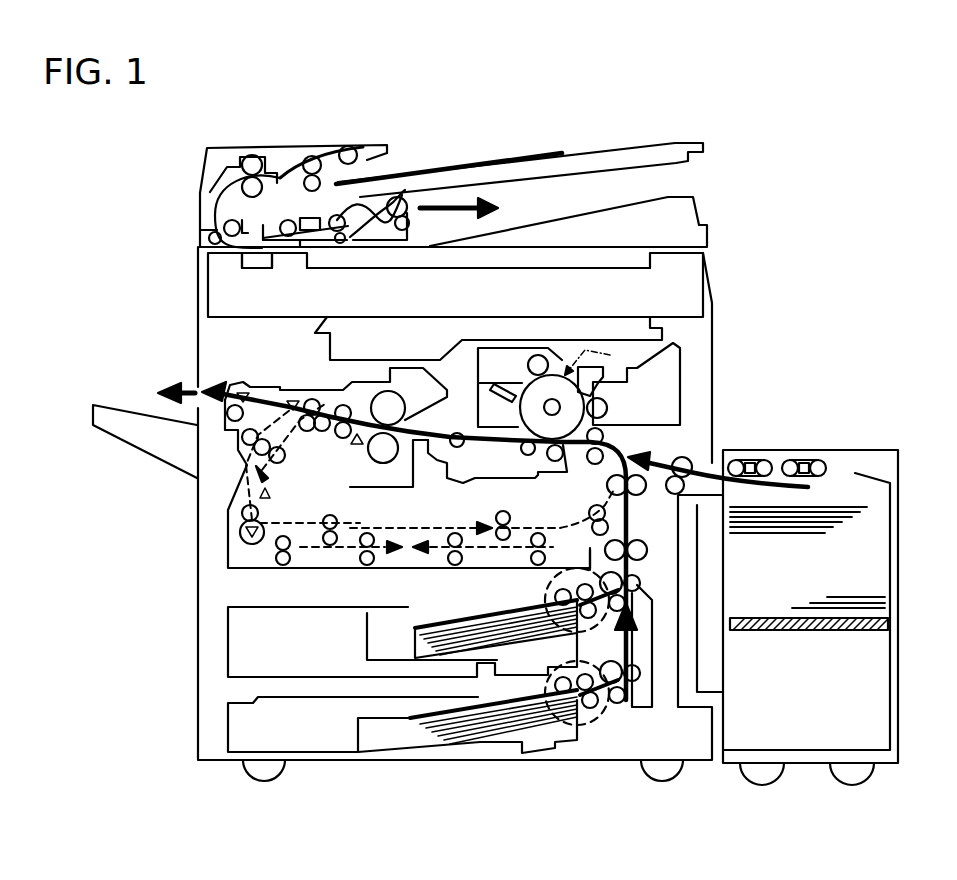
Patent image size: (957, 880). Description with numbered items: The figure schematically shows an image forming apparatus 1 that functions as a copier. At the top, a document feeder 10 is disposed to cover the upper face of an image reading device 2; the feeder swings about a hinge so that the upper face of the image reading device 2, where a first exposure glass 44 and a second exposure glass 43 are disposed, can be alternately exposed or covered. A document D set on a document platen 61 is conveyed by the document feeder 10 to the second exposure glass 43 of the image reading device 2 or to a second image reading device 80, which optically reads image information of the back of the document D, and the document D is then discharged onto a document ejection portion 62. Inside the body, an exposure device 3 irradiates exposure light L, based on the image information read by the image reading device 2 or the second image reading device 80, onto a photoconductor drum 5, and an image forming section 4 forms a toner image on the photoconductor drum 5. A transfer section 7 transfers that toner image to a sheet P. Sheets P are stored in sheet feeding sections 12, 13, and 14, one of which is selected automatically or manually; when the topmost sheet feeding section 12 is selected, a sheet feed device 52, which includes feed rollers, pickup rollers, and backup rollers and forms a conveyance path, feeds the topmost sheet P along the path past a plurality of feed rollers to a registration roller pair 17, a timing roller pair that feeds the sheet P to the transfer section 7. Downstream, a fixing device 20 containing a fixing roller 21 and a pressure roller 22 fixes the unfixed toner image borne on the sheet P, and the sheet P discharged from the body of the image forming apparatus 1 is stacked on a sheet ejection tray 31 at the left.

The image forming apparatus 1 is at (728, 121).
The image reading device 2 is at (216, 324).
The exposure device 3 is at (662, 320).
The image forming section 4 is at (688, 357).
The photoconductor drum 5 is at (528, 376).
The transfer section 7 is at (556, 463).
The document feeder 10 is at (249, 141).
The sheet feeding section 12 is at (366, 638).
The sheet feeding section 13 is at (226, 733).
The sheet feeding section 14 is at (846, 470).
The registration roller pair 17 is at (606, 440).
The fixing device 20 is at (397, 493).
The fixing roller 21 is at (356, 388).
The pressure roller 22 is at (362, 454).
The sheet ejection tray 31 is at (160, 462).
The second exposure glass 43 is at (257, 272).
The first exposure glass 44 is at (425, 272).
The sheet feed device 52 is at (545, 598).
The document platen 61 is at (598, 150).
The document ejection portion 62 is at (641, 198).
The second image reading device 80 is at (318, 216).
The document D is at (503, 156).
The exposure light L is at (594, 361).
The sheet P is at (458, 630).